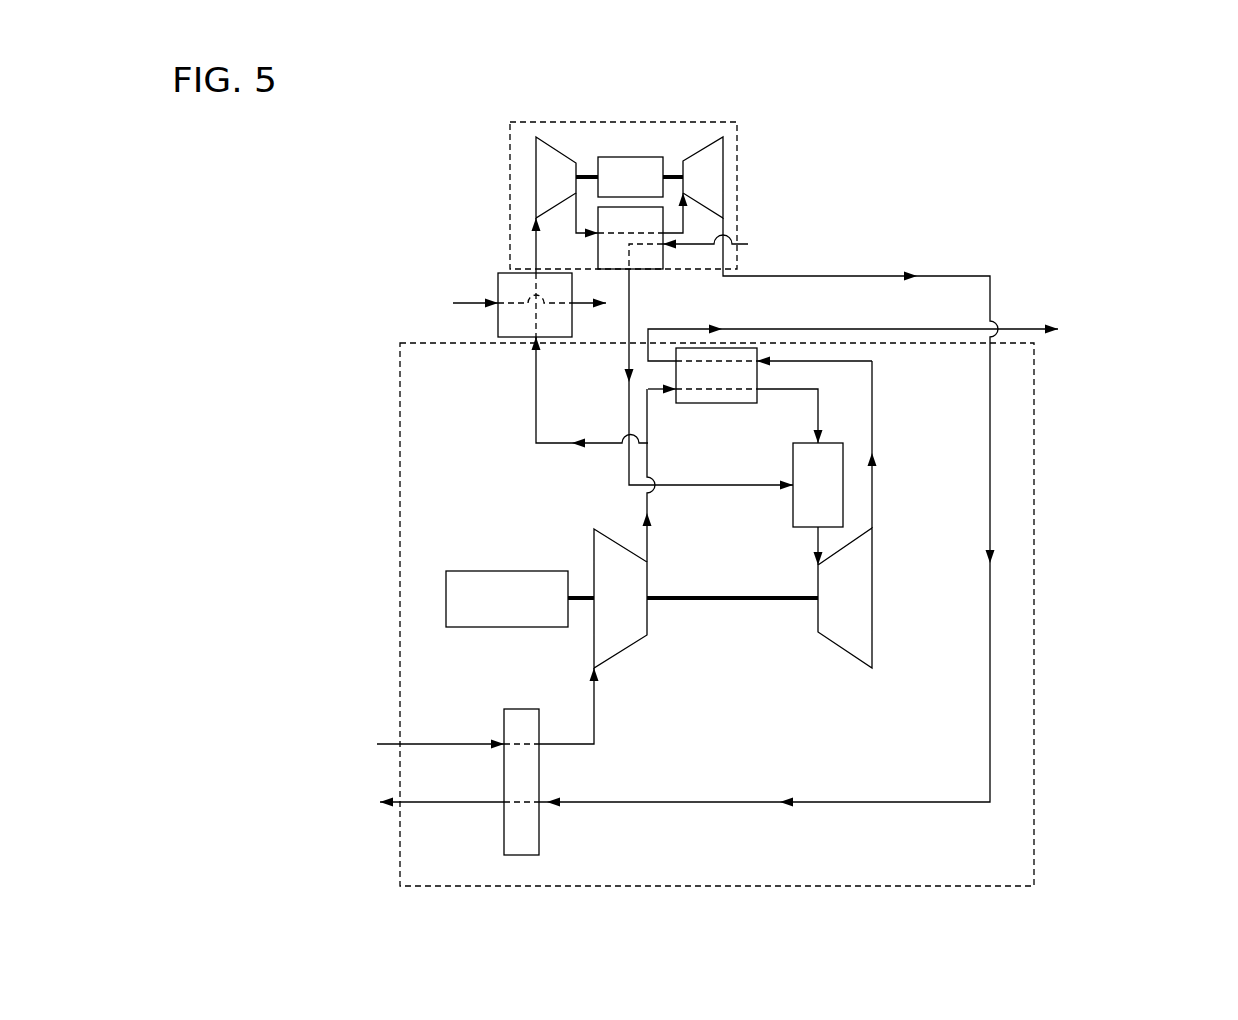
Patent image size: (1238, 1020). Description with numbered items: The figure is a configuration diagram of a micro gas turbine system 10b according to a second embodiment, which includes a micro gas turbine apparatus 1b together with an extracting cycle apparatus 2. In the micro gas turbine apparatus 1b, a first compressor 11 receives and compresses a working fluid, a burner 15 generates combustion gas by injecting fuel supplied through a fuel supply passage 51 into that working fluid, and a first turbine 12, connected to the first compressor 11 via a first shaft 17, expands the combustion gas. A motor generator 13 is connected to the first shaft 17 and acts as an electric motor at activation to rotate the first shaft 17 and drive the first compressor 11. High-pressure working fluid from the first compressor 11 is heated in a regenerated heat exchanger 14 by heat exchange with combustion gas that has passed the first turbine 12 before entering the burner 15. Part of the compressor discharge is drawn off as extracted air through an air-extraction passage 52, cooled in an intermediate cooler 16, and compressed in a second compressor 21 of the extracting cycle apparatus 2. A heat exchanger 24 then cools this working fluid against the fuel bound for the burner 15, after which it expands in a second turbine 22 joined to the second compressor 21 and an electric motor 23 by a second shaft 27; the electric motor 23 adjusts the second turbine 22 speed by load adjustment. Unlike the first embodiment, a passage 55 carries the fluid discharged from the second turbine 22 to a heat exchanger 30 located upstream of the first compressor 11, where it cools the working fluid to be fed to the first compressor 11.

The micro gas turbine system 10b is at (943, 133).
The extracting cycle apparatus 2 is at (508, 155).
The second compressor 21 is at (550, 160).
The second turbine 22 is at (703, 160).
The electric motor 23 is at (628, 157).
The heat exchanger 24 is at (610, 252).
The second shaft 27 is at (589, 174).
The intermediate cooler 16 is at (516, 290).
The micro gas turbine apparatus 1b is at (398, 400).
The air-extraction passage 52 is at (535, 397).
The fuel supply passage 51 is at (628, 471).
The regenerated heat exchanger 14 is at (716, 396).
The burner 15 is at (808, 497).
The first turbine 12 is at (852, 620).
The first shaft 17 is at (708, 603).
The first compressor 11 is at (626, 628).
The motor generator 13 is at (509, 587).
The passage 55 is at (990, 487).
The heat exchanger 30 is at (515, 826).